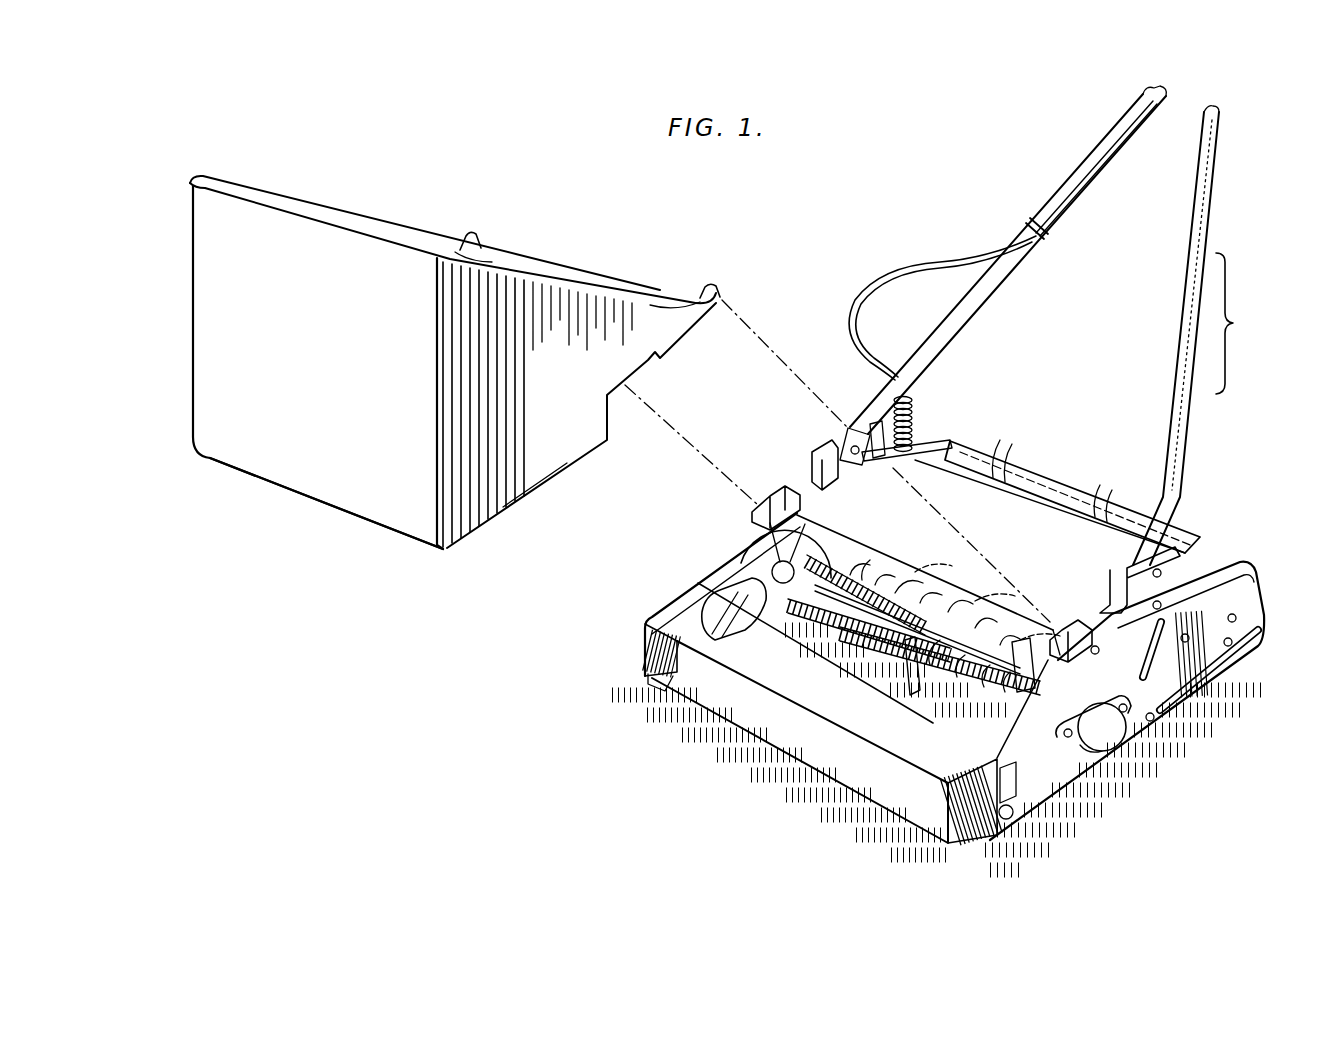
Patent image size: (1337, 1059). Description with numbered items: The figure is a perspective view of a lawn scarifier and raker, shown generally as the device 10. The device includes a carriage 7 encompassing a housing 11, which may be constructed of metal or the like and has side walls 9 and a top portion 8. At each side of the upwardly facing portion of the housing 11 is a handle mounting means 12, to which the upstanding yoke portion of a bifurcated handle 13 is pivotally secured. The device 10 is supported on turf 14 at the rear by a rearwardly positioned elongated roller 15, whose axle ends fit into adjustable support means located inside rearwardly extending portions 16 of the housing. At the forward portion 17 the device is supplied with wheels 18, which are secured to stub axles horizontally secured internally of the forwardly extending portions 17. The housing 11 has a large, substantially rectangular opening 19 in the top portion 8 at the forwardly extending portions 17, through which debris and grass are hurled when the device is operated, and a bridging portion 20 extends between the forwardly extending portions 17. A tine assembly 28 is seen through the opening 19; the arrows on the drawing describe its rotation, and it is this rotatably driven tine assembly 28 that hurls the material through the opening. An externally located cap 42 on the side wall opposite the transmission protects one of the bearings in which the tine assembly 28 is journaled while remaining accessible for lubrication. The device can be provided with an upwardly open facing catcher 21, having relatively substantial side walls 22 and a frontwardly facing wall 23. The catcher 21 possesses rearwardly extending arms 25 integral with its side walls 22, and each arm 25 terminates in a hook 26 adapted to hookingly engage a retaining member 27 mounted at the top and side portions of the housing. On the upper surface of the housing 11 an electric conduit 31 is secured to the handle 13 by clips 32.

The carriage 7 is at (588, 682).
The top portion 8 is at (1060, 562).
The side walls 9 is at (800, 484).
The device 10 is at (1232, 323).
The housing 11 is at (960, 494).
The handle mounting means 12 is at (1172, 563).
The bifurcated handle 13 is at (1200, 206).
The turf 14 is at (1160, 798).
The elongated roller 15 is at (1052, 484).
The rearwardly extending portions 16 is at (934, 445).
The forwardly extending portions 17 is at (655, 603).
The wheels 18 is at (732, 612).
The opening 19 is at (850, 685).
The bridging portion 20 is at (742, 703).
The catcher 21 is at (338, 353).
The side walls 22 is at (381, 233).
The frontwardly facing wall 23 is at (382, 510).
The rearwardly extending arms 25 is at (490, 262).
The hook 26 is at (478, 236).
The retaining member 27 is at (760, 499).
The tine assembly 28 is at (904, 579).
The electric conduit 31 is at (856, 321).
The clips 32 is at (1043, 238).
The cap 42 is at (1113, 733).